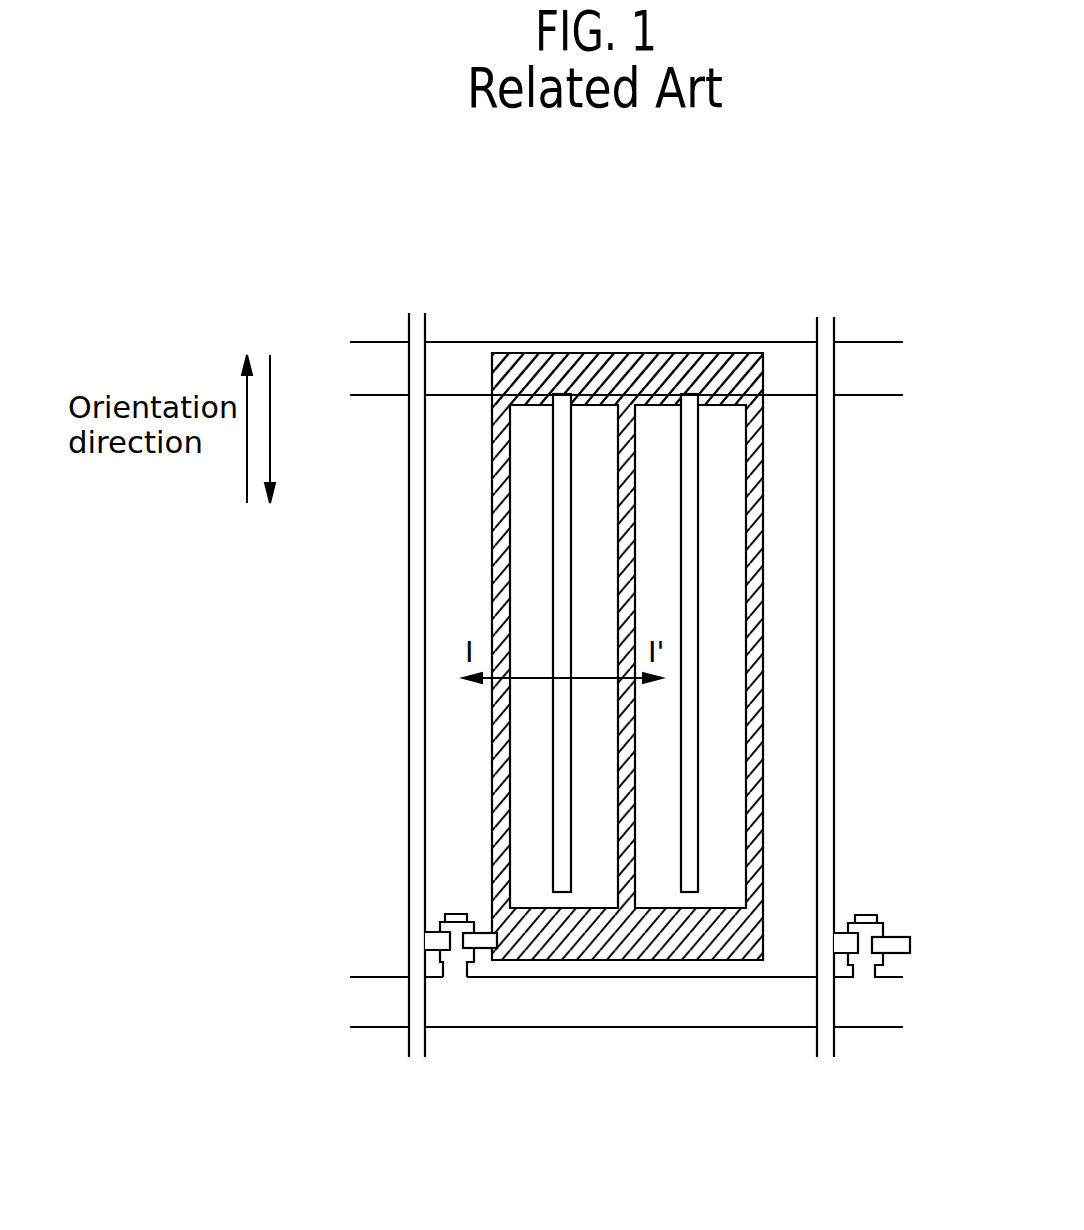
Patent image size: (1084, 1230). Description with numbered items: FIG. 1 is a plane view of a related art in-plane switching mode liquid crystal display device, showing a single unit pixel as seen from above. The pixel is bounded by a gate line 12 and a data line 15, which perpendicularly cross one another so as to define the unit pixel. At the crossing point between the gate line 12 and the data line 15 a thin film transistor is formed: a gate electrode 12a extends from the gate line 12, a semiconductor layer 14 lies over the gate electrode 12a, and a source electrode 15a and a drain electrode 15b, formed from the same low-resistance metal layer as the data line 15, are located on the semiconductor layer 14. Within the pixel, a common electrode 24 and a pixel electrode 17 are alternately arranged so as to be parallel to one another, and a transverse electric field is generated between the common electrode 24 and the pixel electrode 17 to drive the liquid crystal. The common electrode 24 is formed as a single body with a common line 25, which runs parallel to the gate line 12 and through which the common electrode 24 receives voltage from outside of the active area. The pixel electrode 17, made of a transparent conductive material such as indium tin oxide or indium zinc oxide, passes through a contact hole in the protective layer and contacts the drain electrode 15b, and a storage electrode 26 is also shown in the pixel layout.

The gate line 12 is at (638, 1005).
The gate electrode 12a is at (455, 973).
The semiconductor layer 14 is at (443, 917).
The data line 15 is at (417, 772).
The source electrode 15a is at (443, 942).
The drain electrode 15b is at (480, 943).
The pixel electrode 17 is at (622, 583).
The common electrode 24 is at (560, 495).
The common line 25 is at (788, 367).
The storage electrode 26 is at (638, 366).